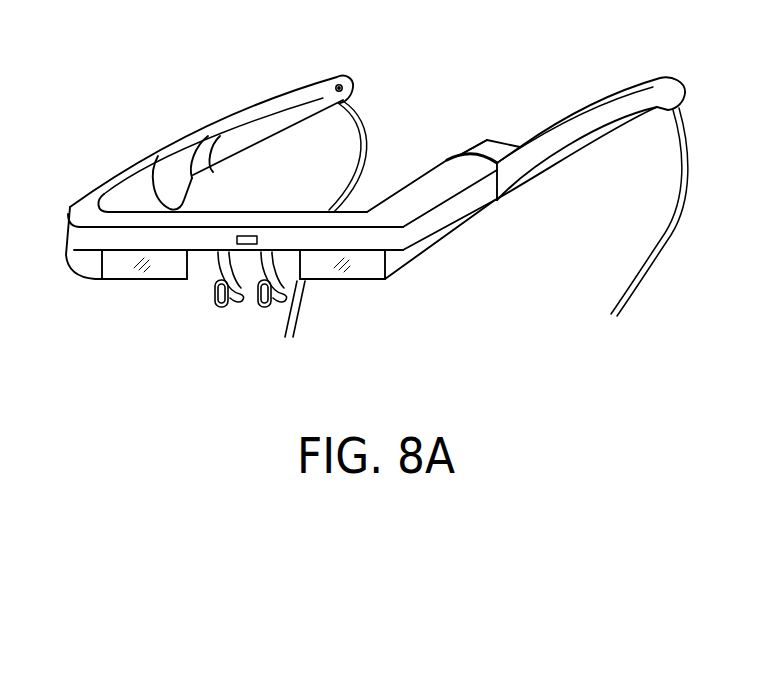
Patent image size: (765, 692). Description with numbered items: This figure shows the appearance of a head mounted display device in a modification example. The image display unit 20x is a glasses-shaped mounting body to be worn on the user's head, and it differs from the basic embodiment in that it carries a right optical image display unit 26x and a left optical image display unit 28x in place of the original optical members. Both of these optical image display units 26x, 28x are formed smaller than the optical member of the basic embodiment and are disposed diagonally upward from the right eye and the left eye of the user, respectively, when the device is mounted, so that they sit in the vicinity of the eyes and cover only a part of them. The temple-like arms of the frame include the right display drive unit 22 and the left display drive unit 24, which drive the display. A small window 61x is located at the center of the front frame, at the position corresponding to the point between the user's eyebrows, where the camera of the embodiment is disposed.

The image display unit 20x is at (548, 66).
The right display drive unit 22 is at (152, 188).
The left display drive unit 24 is at (425, 192).
The light receiving window 61x is at (256, 236).
The right optical image display unit 26x is at (118, 280).
The left optical image display unit 28x is at (333, 280).